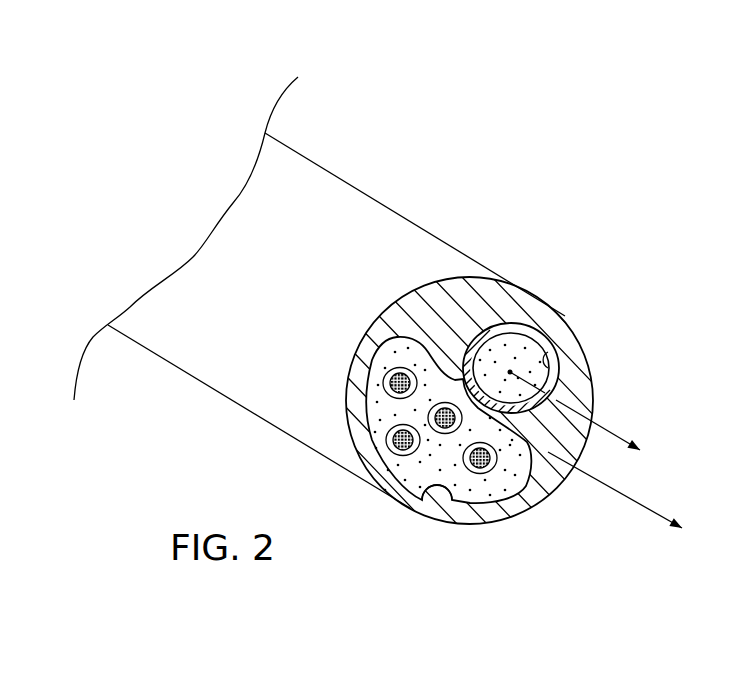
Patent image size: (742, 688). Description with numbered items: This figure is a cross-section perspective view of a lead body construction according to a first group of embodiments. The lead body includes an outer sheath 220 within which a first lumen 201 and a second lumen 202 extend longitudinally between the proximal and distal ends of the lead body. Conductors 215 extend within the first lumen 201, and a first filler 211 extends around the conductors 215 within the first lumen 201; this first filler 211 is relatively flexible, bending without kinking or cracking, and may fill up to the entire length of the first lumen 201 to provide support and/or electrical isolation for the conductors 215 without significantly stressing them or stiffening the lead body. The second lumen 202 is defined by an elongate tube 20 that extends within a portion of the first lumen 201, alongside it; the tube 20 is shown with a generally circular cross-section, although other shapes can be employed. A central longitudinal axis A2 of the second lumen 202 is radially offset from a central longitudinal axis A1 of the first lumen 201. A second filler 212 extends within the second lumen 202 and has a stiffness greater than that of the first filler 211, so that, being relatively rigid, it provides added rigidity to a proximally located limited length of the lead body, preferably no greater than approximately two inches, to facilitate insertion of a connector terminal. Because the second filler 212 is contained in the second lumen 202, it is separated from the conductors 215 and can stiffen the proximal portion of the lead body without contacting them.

The elongate tube 20 is at (466, 322).
The second filler 212 is at (520, 332).
The second lumen 202 is at (556, 377).
The conductors 215 is at (475, 443).
The outer sheath 220 is at (360, 385).
The first filler 211 is at (390, 410).
The first lumen 201 is at (421, 490).
The central longitudinal axis of first lumen A1 is at (628, 500).
The central longitudinal axis of second lumen A2 is at (607, 429).